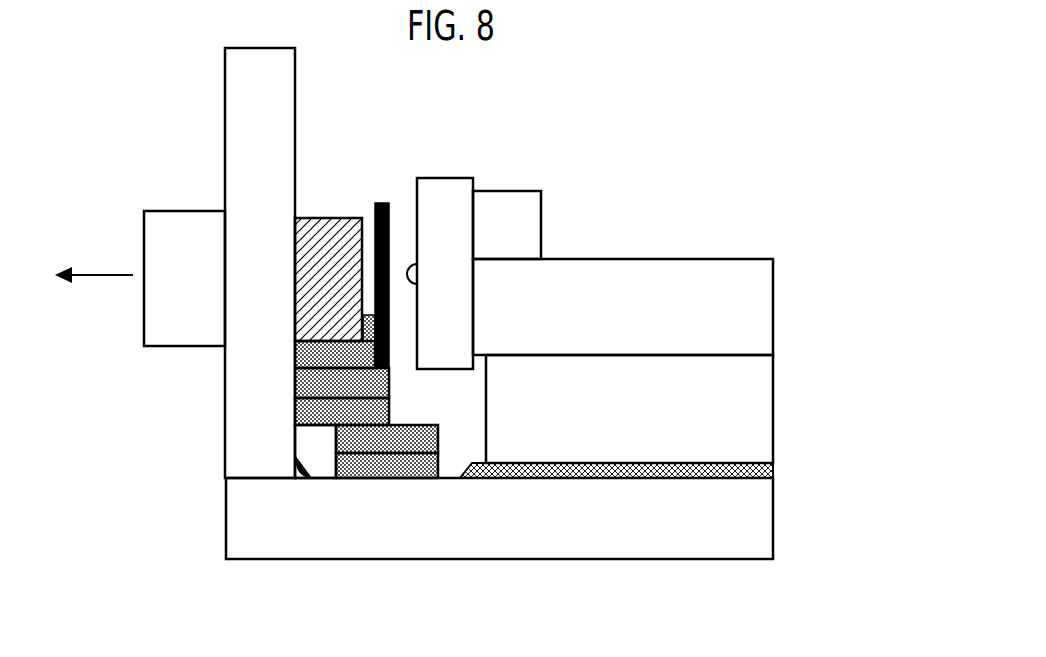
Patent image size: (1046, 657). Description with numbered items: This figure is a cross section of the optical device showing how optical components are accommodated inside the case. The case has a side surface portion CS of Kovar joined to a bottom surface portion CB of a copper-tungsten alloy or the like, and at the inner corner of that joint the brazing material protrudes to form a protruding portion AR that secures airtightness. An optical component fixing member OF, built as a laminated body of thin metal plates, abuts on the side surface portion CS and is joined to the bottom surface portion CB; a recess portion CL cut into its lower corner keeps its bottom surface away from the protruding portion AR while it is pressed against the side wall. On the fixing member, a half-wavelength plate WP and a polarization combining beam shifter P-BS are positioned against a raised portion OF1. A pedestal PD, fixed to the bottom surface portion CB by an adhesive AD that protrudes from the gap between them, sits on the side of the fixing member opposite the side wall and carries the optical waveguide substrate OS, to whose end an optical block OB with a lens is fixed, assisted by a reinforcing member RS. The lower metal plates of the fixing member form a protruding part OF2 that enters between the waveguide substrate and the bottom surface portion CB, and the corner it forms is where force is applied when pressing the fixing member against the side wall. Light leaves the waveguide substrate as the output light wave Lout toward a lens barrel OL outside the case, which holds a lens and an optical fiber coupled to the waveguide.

The output light wave Lout is at (94, 254).
The lens barrel OL is at (198, 230).
The side surface portion of case CS is at (257, 412).
The polarization combining beam shifter P-BS is at (320, 230).
The raised portion OF1 is at (363, 320).
The half-wavelength plate WP is at (392, 215).
The optical block OB is at (445, 240).
The reinforcing member RS is at (515, 240).
The optical waveguide substrate OS is at (720, 303).
The pedestal PD is at (720, 403).
The adhesive AD is at (598, 478).
The bottom surface portion of case CB is at (720, 515).
The protruding part OF2 is at (420, 425).
The optical component fixing member OF is at (357, 478).
The recess portion CL is at (312, 447).
The protruding portion AR is at (283, 478).